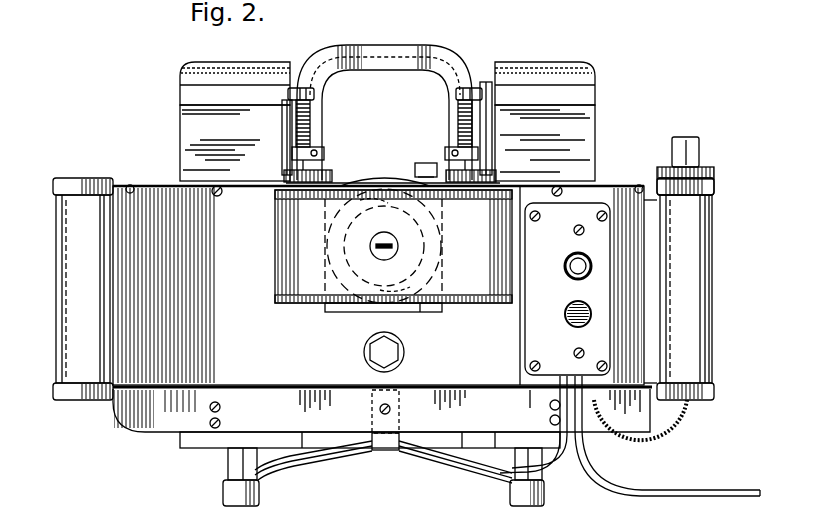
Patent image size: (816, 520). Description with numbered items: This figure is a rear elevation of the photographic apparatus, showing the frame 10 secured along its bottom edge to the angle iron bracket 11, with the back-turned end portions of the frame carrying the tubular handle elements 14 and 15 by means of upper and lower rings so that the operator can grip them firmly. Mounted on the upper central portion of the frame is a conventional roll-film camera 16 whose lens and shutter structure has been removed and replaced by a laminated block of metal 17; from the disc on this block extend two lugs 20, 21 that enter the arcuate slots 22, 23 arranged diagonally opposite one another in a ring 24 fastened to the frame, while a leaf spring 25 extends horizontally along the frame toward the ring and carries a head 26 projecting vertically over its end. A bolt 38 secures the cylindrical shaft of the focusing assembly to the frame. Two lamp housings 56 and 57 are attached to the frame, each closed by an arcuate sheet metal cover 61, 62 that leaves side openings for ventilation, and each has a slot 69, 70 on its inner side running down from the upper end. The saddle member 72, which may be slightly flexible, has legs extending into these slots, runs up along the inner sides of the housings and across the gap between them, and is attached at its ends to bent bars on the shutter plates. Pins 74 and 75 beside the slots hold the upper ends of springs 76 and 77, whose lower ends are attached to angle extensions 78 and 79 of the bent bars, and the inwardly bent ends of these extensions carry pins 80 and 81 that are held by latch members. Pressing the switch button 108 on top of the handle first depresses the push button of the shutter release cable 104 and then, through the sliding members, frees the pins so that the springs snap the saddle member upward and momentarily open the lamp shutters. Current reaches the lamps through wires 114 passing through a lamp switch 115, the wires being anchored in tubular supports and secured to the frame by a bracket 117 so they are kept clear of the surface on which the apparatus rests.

The frame 10 is at (385, 285).
The angle iron bracket 11 is at (262, 387).
The tubular handle element 14 is at (62, 282).
The tubular handle element 15 is at (712, 273).
The camera 16 is at (290, 243).
The laminated block of metal 17 is at (421, 312).
The lug 20 is at (384, 246).
The lug 21 is at (384, 256).
The arcuate slot 22 is at (380, 246).
The arcuate slot 23 is at (397, 245).
The ring 24 is at (330, 312).
The leaf spring 25 is at (393, 174).
The head 26 is at (415, 169).
The bolt 38 is at (366, 352).
The lamp housing 56 is at (186, 128).
The lamp housing 57 is at (580, 127).
The sheet metal cover 61 is at (181, 71).
The sheet metal cover 62 is at (586, 69).
The slot 69 is at (282, 117).
The slot 70 is at (492, 126).
The saddle member 72 is at (384, 112).
The pin 74 is at (302, 88).
The pin 75 is at (466, 88).
The spring 76 is at (311, 113).
The spring 77 is at (457, 113).
The angle extension 78 is at (320, 151).
The angle extension 79 is at (447, 149).
The pin 80 is at (318, 156).
The pin 81 is at (452, 154).
The cable 104 is at (668, 432).
The switch button 108 is at (690, 149).
The wires 114 is at (308, 468).
The lamp switch 115 is at (567, 289).
The bracket 117 is at (384, 450).